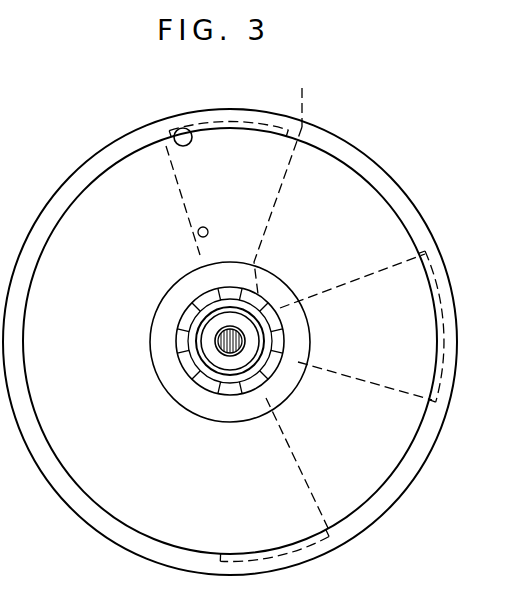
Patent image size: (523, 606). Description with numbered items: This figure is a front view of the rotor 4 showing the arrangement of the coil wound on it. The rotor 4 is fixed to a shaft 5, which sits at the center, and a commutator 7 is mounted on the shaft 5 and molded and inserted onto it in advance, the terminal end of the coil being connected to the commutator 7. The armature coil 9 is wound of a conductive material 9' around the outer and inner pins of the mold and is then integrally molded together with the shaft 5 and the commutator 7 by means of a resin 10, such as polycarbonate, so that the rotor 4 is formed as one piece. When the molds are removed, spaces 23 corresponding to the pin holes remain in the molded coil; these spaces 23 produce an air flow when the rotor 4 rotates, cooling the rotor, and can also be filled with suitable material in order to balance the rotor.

The rotor 4 is at (135, 138).
The resin 10 is at (113, 193).
The commutator 7 is at (190, 366).
The shaft 5 is at (216, 339).
The space 23 is at (182, 128).
The armature coil 9 is at (306, 342).
The conductive material 9' is at (295, 104).